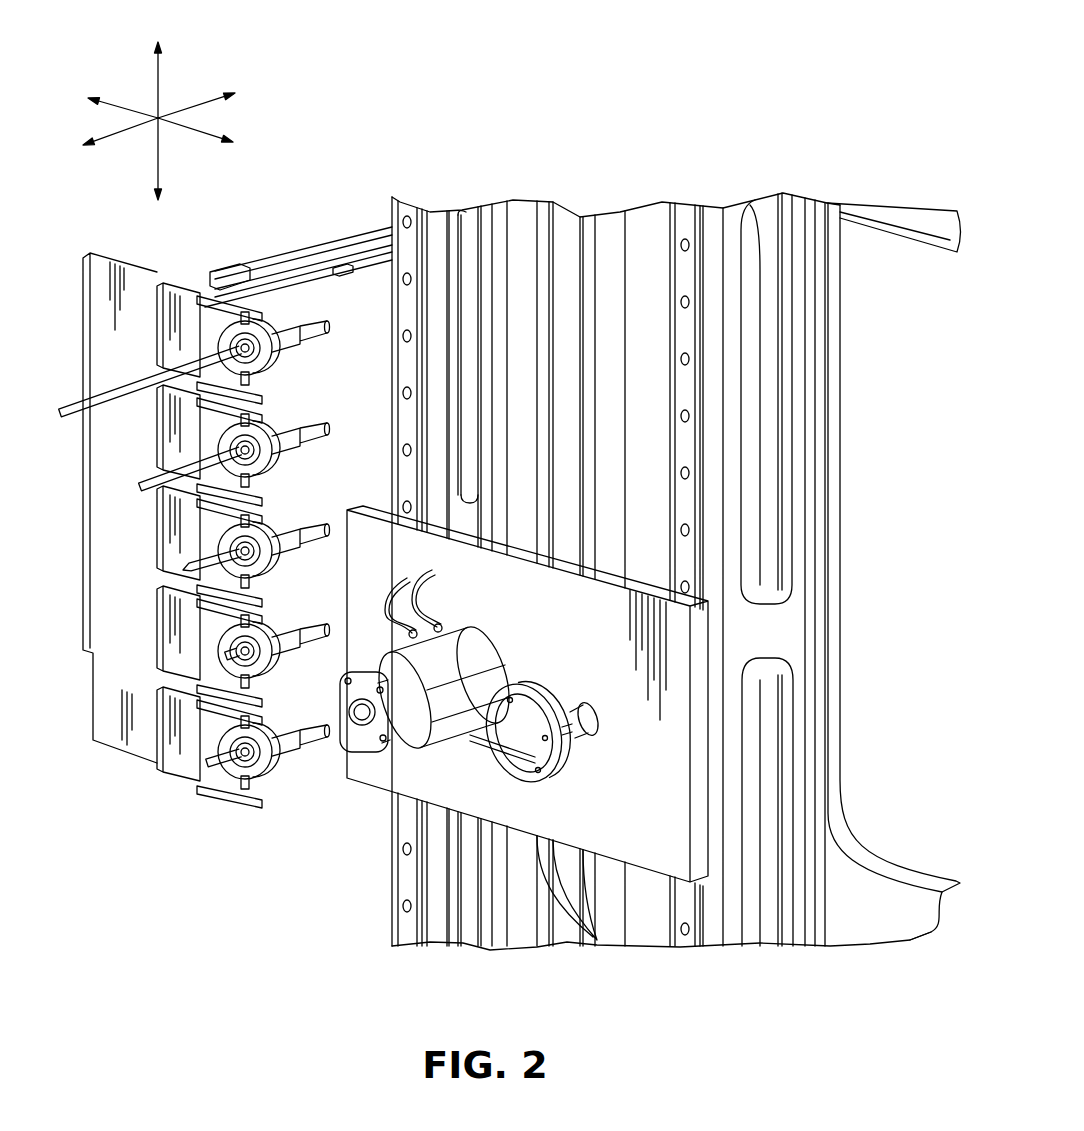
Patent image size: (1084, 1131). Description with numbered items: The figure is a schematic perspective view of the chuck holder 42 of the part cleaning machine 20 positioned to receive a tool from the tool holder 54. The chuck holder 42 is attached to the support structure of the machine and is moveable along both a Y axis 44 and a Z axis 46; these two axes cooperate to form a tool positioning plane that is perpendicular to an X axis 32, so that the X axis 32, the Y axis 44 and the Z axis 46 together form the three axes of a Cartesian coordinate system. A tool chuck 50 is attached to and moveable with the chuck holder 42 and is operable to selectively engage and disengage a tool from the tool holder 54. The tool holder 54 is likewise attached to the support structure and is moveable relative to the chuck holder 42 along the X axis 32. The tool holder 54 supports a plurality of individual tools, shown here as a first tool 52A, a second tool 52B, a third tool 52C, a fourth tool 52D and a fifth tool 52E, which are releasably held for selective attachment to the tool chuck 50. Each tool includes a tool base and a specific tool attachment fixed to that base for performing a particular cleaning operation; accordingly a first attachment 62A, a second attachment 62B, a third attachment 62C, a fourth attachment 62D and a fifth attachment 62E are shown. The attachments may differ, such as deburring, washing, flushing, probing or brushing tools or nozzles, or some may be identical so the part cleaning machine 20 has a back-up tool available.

The part cleaning machine 20 is at (727, 103).
The X axis 32 is at (208, 102).
The chuck holder 42 is at (672, 676).
The Y axis 44 is at (120, 106).
The Z axis 46 is at (160, 77).
The tool chuck 50 is at (443, 655).
The first tool 52A is at (276, 330).
The second tool 52B is at (262, 443).
The third tool 52C is at (262, 542).
The fourth tool 52D is at (262, 637).
The fifth tool 52E is at (260, 737).
The tool holder 54 is at (363, 297).
The first attachment 62A is at (103, 393).
The second attachment 62B is at (157, 470).
The third attachment 62C is at (190, 563).
The fourth attachment 62D is at (233, 643).
The fifth attachment 62E is at (237, 757).